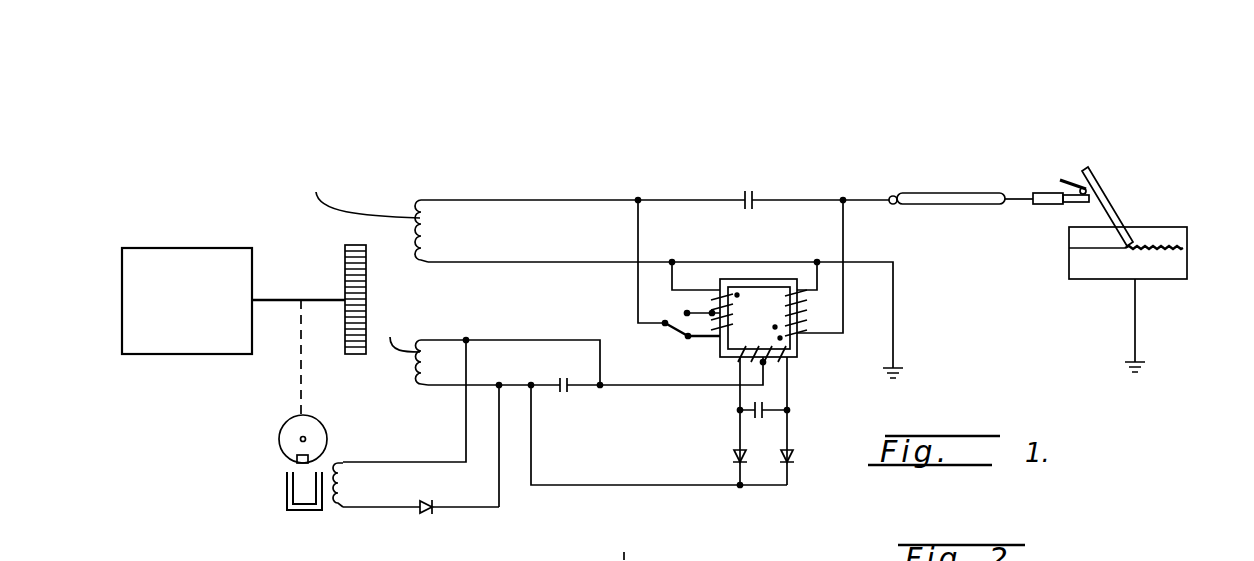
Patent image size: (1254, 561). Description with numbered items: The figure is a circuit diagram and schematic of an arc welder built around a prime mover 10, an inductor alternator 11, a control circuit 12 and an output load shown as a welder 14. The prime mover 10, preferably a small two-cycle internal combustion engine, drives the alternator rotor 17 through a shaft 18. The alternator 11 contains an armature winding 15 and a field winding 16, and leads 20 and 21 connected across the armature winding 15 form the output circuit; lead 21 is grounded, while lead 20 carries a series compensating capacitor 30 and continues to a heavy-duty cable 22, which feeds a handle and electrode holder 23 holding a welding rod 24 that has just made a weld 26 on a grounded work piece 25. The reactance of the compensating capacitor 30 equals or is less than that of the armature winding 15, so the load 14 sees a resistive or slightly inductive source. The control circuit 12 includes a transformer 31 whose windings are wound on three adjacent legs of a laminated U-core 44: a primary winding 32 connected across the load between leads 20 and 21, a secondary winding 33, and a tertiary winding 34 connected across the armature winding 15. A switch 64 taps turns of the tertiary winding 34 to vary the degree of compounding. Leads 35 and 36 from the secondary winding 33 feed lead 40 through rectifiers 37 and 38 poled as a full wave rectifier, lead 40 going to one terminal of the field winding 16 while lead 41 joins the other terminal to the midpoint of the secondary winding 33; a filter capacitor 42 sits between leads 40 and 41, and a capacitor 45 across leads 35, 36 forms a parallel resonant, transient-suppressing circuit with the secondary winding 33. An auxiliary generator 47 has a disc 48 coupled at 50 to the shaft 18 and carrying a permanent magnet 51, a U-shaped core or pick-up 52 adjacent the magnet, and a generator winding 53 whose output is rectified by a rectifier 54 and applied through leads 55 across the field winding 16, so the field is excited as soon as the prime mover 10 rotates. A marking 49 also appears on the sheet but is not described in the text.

The prime mover 10 is at (155, 248).
The inductor alternator 11 is at (343, 242).
The control circuit 12 is at (808, 343).
The welder 14 is at (1138, 201).
The armature winding 15 is at (421, 237).
The field winding 16 is at (420, 366).
The rotor 17 is at (366, 299).
The shaft 18 is at (272, 300).
The output lead 20 is at (604, 198).
The output lead 21 is at (600, 263).
The heavy-duty cable 22 is at (948, 195).
The handle and electrode holder 23 is at (1042, 192).
The welding rod 24 is at (1123, 220).
The work piece 25 is at (1185, 267).
The weld 26 is at (1190, 241).
The series compensating capacitor 30 is at (755, 193).
The transformer 31 is at (756, 280).
The first winding 32 is at (792, 298).
The second winding 33 is at (738, 354).
The third winding 34 is at (733, 320).
The lead 35 is at (790, 383).
The lead 36 is at (738, 392).
The rectifier 37 is at (790, 453).
The rectifier 38 is at (735, 455).
The lead 40 is at (688, 485).
The lead 41 is at (600, 366).
The filter capacitor 42 is at (563, 400).
The U-core 44 is at (727, 282).
The capacitor 45 is at (738, 416).
The auxiliary generator 47 is at (276, 432).
The disc 48 is at (323, 433).
The marking 49 is at (135, 535).
The coupling 50 is at (300, 370).
The permanent magnet 51 is at (291, 451).
The core or pick-up 52 is at (317, 511).
The generator winding 53 is at (343, 485).
The rectifier 54 is at (426, 514).
The leads 55 is at (499, 437).
The switch 64 is at (665, 323).